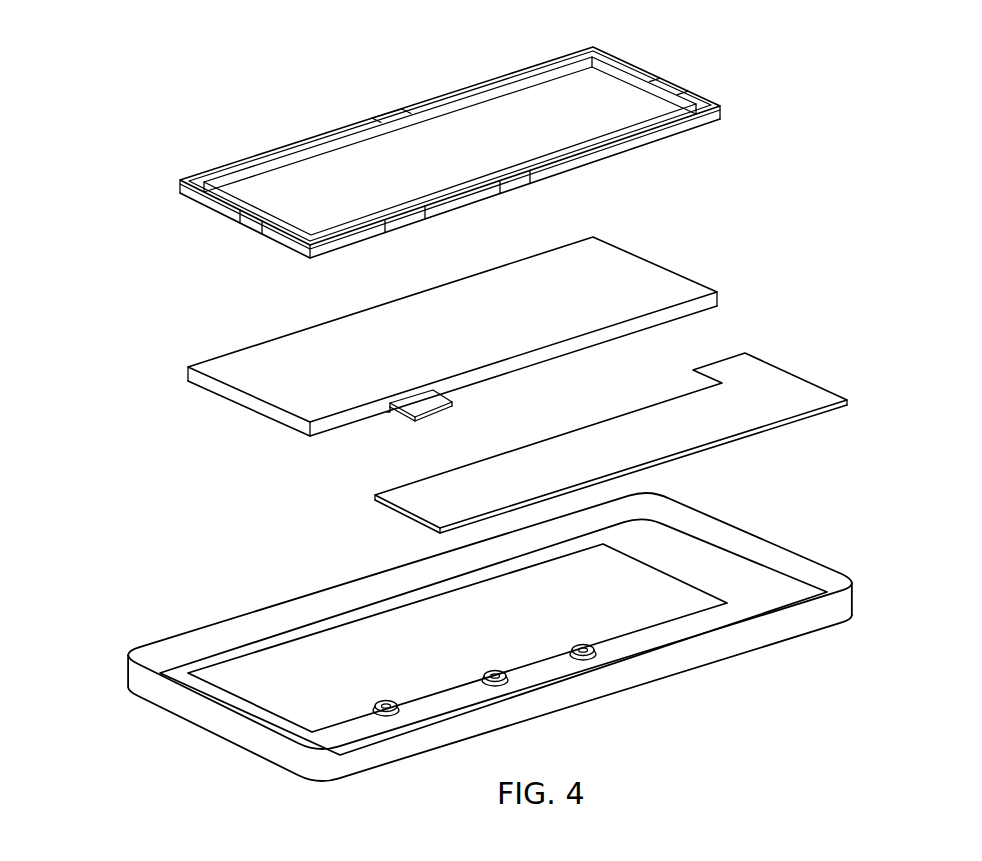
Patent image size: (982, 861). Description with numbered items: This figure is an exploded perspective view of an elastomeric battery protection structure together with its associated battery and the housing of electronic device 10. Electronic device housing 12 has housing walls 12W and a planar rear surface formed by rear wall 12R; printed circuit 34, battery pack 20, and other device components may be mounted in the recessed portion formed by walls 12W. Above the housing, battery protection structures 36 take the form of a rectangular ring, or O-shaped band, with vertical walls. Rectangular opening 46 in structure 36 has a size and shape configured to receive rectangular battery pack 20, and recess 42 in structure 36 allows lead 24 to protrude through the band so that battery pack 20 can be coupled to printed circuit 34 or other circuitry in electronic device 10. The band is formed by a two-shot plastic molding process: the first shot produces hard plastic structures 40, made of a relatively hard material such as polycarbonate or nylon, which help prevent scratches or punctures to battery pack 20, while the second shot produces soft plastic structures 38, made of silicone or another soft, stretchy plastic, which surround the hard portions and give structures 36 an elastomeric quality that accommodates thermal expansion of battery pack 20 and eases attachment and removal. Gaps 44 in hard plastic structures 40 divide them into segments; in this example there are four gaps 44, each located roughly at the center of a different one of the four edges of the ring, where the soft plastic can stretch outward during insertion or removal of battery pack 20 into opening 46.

The electronic device 10 is at (92, 127).
The electronic device housing 12 is at (509, 637).
The housing walls 12W is at (822, 563).
The rear wall 12R is at (632, 620).
The battery pack 20 is at (465, 347).
The lead 24 is at (427, 400).
The printed circuit 34 is at (790, 372).
The battery protection structures 36 is at (472, 145).
The soft plastic structures 38 is at (387, 120).
The hard plastic structures 40 is at (493, 78).
The recess 42 is at (407, 234).
The gaps 44 is at (459, 155).
The rectangular opening 46 is at (558, 105).